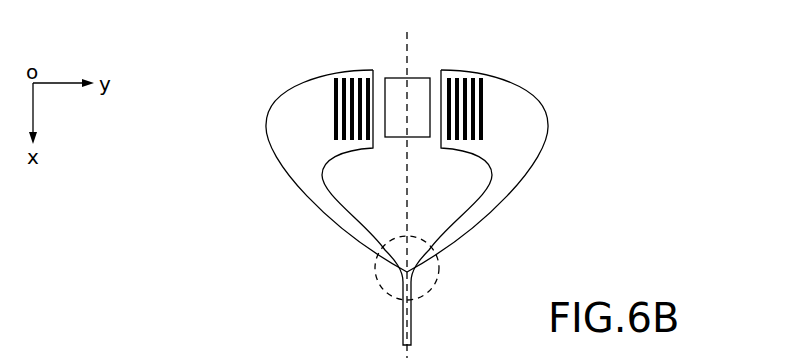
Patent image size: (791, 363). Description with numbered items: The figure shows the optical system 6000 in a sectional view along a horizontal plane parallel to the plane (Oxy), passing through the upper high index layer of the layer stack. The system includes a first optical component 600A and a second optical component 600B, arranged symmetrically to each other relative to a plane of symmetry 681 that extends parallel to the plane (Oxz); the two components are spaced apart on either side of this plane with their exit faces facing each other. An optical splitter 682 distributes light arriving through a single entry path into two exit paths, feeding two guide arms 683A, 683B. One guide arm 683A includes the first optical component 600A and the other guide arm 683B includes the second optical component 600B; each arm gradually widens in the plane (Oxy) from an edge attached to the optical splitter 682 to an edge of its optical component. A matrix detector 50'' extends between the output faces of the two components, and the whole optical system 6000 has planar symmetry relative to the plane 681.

The optical system 6000 is at (228, 83).
The matrix detector 50'' is at (394, 73).
The first optical component 600A is at (269, 181).
The second optical component 600B is at (546, 171).
The guide arm 683A is at (275, 126).
The guide arm 683B is at (543, 121).
The plane of symmetry 681 is at (407, 192).
The optical splitter 682 is at (437, 283).